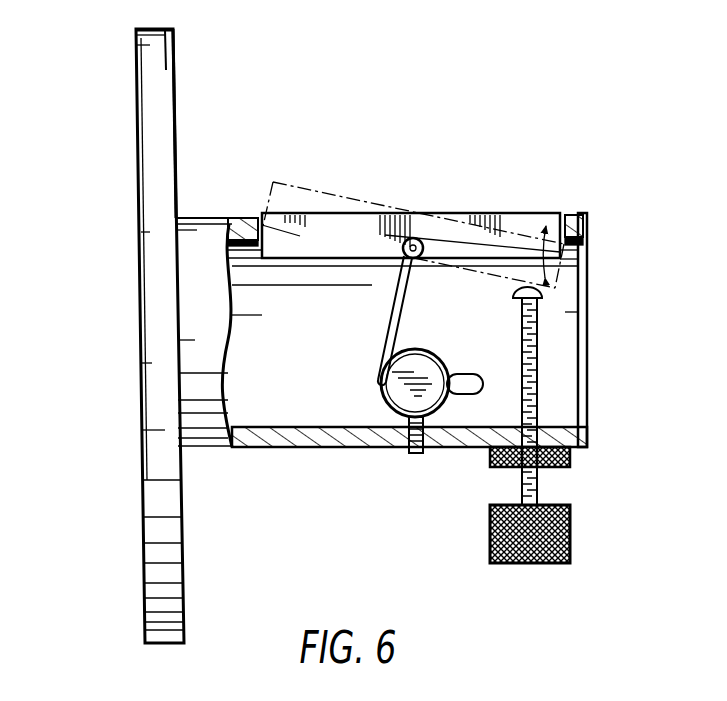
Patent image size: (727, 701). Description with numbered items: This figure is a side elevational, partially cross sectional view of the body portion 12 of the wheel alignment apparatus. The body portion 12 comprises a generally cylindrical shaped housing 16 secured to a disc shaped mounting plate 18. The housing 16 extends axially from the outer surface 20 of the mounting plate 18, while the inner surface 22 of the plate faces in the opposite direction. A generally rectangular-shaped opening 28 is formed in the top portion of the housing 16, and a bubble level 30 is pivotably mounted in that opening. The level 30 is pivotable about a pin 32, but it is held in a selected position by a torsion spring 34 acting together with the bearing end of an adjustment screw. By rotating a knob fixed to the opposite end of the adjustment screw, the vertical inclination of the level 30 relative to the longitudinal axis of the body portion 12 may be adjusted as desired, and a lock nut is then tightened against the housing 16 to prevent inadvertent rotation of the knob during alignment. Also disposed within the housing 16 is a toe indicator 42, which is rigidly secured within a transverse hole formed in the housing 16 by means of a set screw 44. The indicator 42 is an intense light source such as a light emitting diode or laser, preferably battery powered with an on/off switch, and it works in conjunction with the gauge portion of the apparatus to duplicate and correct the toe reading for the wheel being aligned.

The body portion 12 is at (398, 150).
The housing 16 is at (190, 216).
The mounting plate 18 is at (165, 58).
The outer surface 20 is at (175, 136).
The inner surface 22 is at (137, 126).
The opening 28 is at (563, 213).
The bubble level 30 is at (505, 213).
The pin 32 is at (418, 260).
The torsion spring 34 is at (392, 322).
The toe indicator 42 is at (438, 354).
The set screw 44 is at (415, 455).